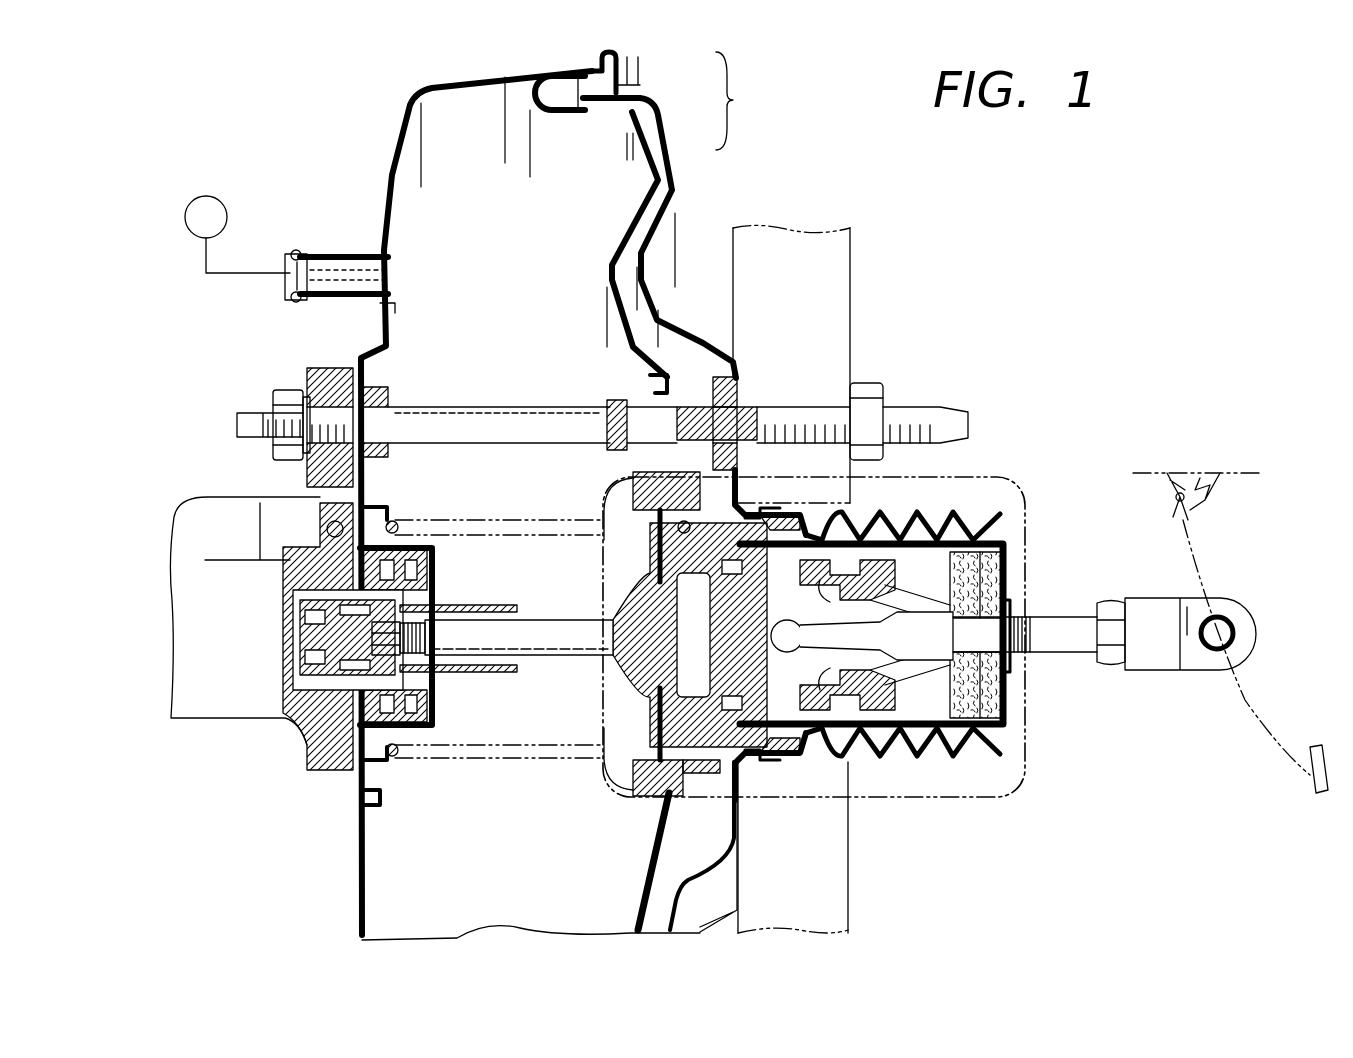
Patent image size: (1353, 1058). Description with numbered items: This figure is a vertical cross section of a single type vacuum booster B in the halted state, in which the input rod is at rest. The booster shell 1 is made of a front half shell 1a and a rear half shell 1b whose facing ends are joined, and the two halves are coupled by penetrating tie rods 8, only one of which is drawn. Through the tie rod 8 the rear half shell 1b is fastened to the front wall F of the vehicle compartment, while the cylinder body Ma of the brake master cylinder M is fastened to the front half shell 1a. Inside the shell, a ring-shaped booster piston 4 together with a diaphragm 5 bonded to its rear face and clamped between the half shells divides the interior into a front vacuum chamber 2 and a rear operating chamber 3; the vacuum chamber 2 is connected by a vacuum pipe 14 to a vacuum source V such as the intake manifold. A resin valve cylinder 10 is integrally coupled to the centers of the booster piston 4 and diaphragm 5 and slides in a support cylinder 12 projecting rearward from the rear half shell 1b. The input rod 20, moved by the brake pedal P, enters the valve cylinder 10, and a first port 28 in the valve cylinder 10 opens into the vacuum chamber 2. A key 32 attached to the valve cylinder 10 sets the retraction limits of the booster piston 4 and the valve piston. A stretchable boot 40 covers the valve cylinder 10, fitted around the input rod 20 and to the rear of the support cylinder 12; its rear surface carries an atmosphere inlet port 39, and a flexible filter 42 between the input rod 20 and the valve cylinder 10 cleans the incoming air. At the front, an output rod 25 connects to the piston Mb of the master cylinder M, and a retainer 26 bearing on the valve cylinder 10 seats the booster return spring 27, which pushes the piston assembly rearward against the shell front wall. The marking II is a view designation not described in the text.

The booster shell 1 is at (734, 101).
The front half shell 1a is at (603, 52).
The rear half shell 1b is at (666, 136).
The vacuum chamber 2 is at (497, 286).
The operating chamber 3 is at (697, 375).
The booster piston 4 is at (626, 229).
The diaphragm 5 is at (573, 110).
The tie rod 8 is at (478, 408).
The valve cylinder 10 is at (1026, 521).
The support cylinder 12 is at (800, 516).
The vacuum pipe 14 is at (366, 251).
The input rod 20 is at (1027, 600).
The output rod 25 is at (563, 622).
The retainer 26 is at (625, 712).
The booster return spring 27 is at (506, 519).
The first port 28 is at (765, 766).
The key 32 is at (745, 517).
The atmosphere inlet port 39 is at (1008, 690).
The boot 40 is at (880, 772).
The filter 42 is at (986, 722).
The vacuum booster B is at (385, 161).
The front wall of the vehicle compartment F is at (852, 265).
The brake master cylinder M is at (196, 509).
The cylinder body Ma is at (305, 742).
The piston Mb is at (290, 640).
The brake pedal P is at (1320, 793).
The vacuum source V is at (188, 205).
The section view indicator II is at (1028, 748).